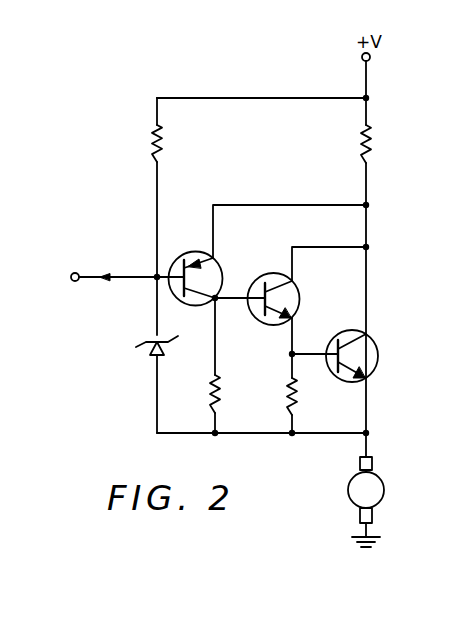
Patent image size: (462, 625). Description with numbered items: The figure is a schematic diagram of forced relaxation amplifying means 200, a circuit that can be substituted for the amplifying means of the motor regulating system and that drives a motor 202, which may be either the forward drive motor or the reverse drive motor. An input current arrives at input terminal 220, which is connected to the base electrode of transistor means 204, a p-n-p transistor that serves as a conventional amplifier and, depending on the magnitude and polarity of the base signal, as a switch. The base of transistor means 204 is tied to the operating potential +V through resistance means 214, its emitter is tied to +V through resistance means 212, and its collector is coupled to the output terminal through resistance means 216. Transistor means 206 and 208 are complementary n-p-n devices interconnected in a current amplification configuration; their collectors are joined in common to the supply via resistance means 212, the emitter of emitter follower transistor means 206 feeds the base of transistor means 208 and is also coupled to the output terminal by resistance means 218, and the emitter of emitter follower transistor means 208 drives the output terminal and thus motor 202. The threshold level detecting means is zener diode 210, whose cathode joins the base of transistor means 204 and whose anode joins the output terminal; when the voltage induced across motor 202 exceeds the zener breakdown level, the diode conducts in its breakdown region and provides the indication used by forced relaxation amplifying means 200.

The forced relaxation amplifying means 200 is at (282, 155).
The motor 202 is at (349, 492).
The transistor means 204 is at (193, 250).
The transistor means 206 is at (300, 292).
The transistor means 208 is at (379, 357).
The zener diode 210 is at (152, 360).
The resistance means 212 is at (372, 134).
The resistance means 214 is at (148, 150).
The resistance means 216 is at (218, 400).
The resistance means 218 is at (297, 393).
The input terminal 220 is at (77, 271).